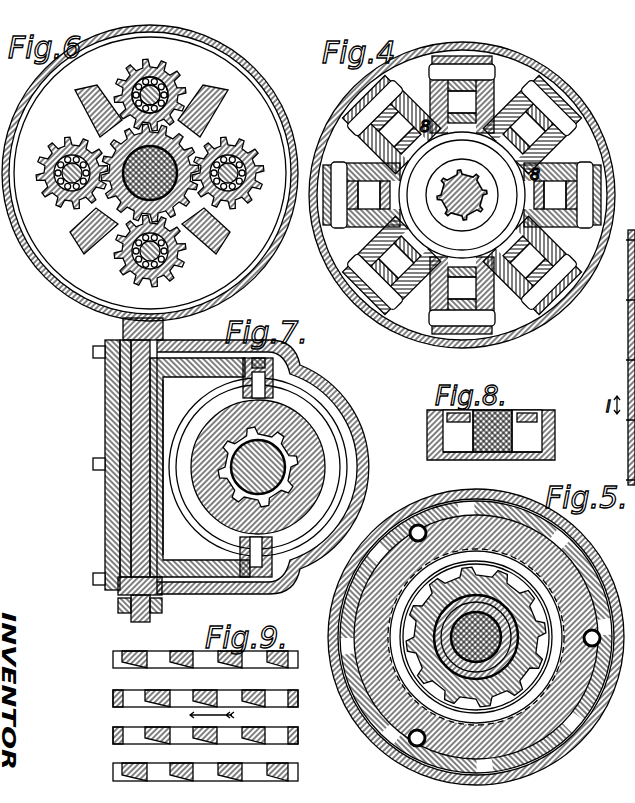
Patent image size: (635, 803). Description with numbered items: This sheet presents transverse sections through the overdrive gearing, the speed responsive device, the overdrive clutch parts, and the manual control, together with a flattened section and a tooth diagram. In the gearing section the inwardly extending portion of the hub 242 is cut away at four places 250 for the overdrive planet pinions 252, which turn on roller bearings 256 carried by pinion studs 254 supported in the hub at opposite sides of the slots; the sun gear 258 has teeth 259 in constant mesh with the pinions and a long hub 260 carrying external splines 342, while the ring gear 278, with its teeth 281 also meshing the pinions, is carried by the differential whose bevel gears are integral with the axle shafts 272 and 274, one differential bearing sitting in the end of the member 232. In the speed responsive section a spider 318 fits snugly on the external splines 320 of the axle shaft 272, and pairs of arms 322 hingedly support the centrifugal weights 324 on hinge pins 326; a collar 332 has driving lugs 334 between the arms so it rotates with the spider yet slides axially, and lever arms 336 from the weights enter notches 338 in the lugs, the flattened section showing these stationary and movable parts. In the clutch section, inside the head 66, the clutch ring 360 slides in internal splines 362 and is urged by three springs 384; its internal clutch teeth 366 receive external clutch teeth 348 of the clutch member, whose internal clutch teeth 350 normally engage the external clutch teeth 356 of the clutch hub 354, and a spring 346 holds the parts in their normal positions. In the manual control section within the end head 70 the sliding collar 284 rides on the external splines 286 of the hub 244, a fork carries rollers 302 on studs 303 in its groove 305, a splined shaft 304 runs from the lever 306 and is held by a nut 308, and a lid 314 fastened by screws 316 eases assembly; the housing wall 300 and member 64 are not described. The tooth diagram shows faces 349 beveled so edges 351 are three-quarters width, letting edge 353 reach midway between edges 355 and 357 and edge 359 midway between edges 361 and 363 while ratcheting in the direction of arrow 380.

In FIG. 6, the member 232 is at (240, 66).
In FIG. 6, the cut-away places 250 is at (203, 77).
In FIG. 6, the sun gear 258 is at (150, 173).
In FIG. 6, the axle shaft 272 is at (166, 173).
In FIG. 4, the axle shaft 272 is at (469, 187).
In FIG. 5, the axle shaft 272 is at (462, 637).
In FIG. 6, the overdrive planet pinions 252 is at (185, 95).
In FIG. 6, the pinion studs 254 is at (131, 90).
In FIG. 6, the roller bearings 256 is at (139, 97).
In FIG. 6, the ring gear 278 is at (58, 114).
In FIG. 6, the teeth of sun gear 259 is at (207, 124).
In FIG. 6, the teeth of ring gear 281 is at (70, 218).
In FIG. 6, the hub 242 is at (210, 222).
In FIG. 4, the head 66 is at (540, 63).
In FIG. 5, the head 66 is at (580, 522).
In FIG. 4, the hinge pins 326 is at (495, 100).
In FIG. 4, the centrifugal weights 324 is at (566, 115).
In FIG. 4, the arms 322 is at (562, 175).
In FIG. 8, the arms 322 is at (550, 411).
In FIG. 4, the lever arms 336 is at (522, 288).
In FIG. 8, the lever arms 336 is at (528, 412).
In FIG. 4, the driving lugs 334 is at (445, 203).
In FIG. 8, the driving lugs 334 is at (472, 455).
In FIG. 4, the notches 338 is at (418, 145).
In FIG. 8, the notches 338 is at (512, 401).
In FIG. 4, the spider 318 is at (485, 151).
In FIG. 4, the external splines 320 is at (461, 224).
In FIG. 7, the end head 70 is at (322, 398).
In FIG. 7, the housing 300 is at (212, 375).
In FIG. 7, the splined shaft 304 is at (150, 401).
In FIG. 7, the lever 306 is at (123, 330).
In FIG. 7, the lid 314 is at (108, 378).
In FIG. 7, the screws 316 is at (97, 451).
In FIG. 7, the nut 308 is at (152, 616).
In FIG. 7, the sliding collar 284 is at (335, 410).
In FIG. 7, the groove 305 is at (340, 440).
In FIG. 7, the rollers 302 is at (273, 392).
In FIG. 7, the studs 303 is at (250, 390).
In FIG. 7, the hub 244 is at (262, 507).
In FIG. 7, the external splines 286 is at (262, 432).
In FIG. 7, the axle shaft 274 is at (268, 466).
In FIG. 8, the collar 332 is at (500, 462).
In FIG. 5, the internal splines 362 is at (570, 752).
In FIG. 5, the clutch ring 360 is at (590, 714).
In FIG. 5, the springs 384 is at (410, 522).
In FIG. 5, the internal clutch teeth 366 is at (392, 660).
In FIG. 9, the internal clutch teeth 366 is at (272, 767).
In FIG. 5, the internal clutch teeth 350 is at (500, 560).
In FIG. 9, the internal clutch teeth 350 is at (151, 705).
In FIG. 5, the external clutch teeth 356 is at (540, 580).
In FIG. 9, the external clutch teeth 356 is at (280, 668).
In FIG. 5, the clutch hub 354 is at (525, 611).
In FIG. 5, the spring 346 is at (520, 650).
In FIG. 5, the external splines 342 is at (476, 637).
In FIG. 5, the long hub 260 is at (476, 637).
In FIG. 5, the frame member 64 is at (628, 372).
In FIG. 9, the edge 353 is at (147, 666).
In FIG. 9, the edges 351 is at (175, 665).
In FIG. 9, the faces 349 is at (225, 665).
In FIG. 9, the edge 357 is at (125, 707).
In FIG. 9, the edge 355 is at (113, 694).
In FIG. 9, the external clutch teeth 348 is at (245, 708).
In FIG. 9, the arrow 380 is at (198, 715).
In FIG. 9, the edge 361 is at (120, 745).
In FIG. 9, the edge 363 is at (122, 730).
In FIG. 9, the edge 359 is at (118, 765).